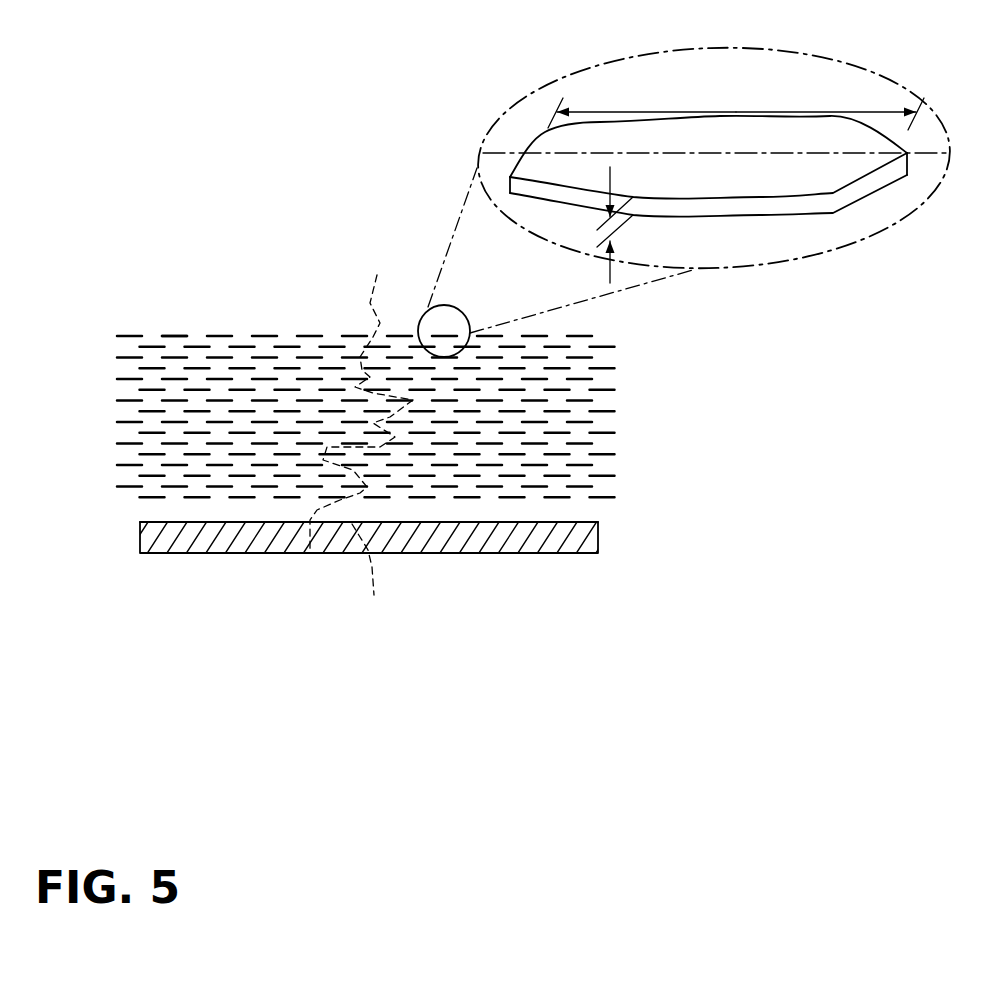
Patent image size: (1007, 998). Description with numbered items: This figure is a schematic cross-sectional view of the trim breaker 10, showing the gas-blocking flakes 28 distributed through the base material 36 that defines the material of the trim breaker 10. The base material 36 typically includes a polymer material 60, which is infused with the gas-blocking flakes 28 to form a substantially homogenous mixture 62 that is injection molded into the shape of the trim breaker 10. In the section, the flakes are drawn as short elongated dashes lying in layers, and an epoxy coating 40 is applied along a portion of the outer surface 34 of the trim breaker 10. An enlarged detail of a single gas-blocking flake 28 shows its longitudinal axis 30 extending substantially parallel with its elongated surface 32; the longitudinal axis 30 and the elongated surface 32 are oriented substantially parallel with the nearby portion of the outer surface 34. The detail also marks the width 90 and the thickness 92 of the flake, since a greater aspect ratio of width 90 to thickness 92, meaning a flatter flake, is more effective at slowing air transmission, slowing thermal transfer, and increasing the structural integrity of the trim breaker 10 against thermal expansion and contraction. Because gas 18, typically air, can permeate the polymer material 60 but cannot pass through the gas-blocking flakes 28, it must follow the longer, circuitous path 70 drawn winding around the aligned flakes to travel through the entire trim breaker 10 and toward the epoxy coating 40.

The trim breaker 10 is at (88, 537).
The gas 18 is at (370, 300).
The gas-blocking flakes 28 is at (580, 420).
The longitudinal axis 30 is at (812, 155).
The elongated surface 32 is at (578, 167).
The outer surface 34 is at (460, 522).
The base material 36 is at (262, 318).
The epoxy coating 40 is at (175, 538).
The polymer material 60 is at (198, 338).
The homogenous mixture 62 is at (105, 358).
The path 70 is at (383, 624).
The width 90 is at (668, 112).
The thickness 92 is at (612, 268).